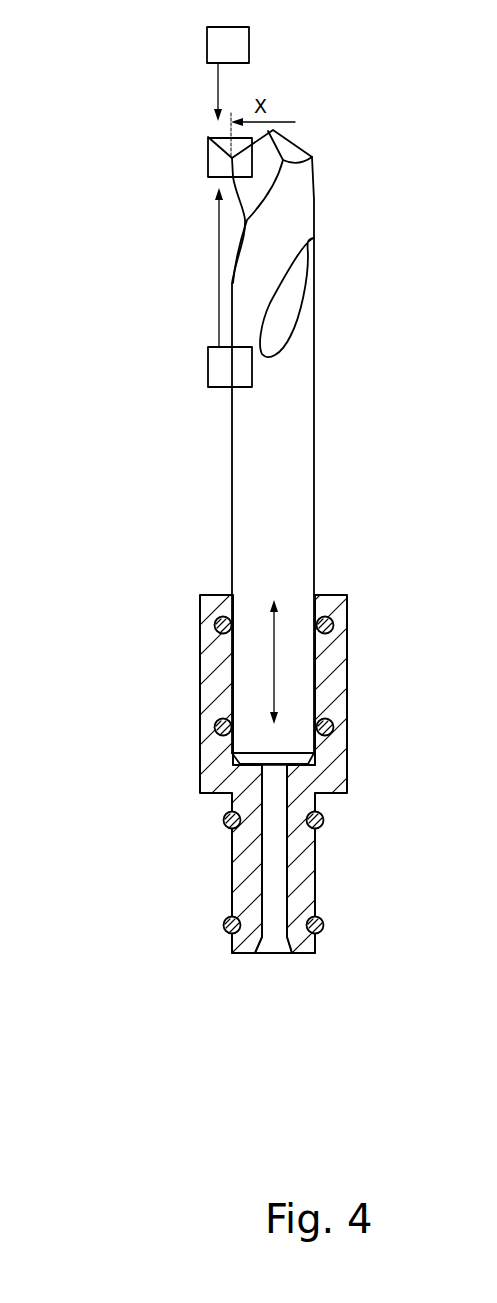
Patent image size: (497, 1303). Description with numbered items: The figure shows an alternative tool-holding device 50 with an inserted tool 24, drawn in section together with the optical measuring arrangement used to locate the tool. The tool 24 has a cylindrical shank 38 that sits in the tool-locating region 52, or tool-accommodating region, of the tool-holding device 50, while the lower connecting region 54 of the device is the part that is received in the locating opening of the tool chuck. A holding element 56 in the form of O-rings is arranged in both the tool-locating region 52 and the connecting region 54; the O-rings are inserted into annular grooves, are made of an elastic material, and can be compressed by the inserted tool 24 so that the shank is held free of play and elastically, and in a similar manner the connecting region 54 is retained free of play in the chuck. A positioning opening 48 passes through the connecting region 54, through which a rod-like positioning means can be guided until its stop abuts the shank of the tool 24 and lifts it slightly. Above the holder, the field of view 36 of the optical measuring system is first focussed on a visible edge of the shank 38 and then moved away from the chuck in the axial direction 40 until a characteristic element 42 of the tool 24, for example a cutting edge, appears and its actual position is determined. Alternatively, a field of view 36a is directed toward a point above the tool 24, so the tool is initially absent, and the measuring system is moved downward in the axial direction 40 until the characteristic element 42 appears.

The tool 24 is at (209, 432).
The field of view 36 is at (208, 362).
The field of view 36a is at (207, 53).
The cylindrical shank 38 is at (262, 530).
The axial direction 40 is at (216, 232).
The characteristic element 42 is at (208, 138).
The positioning opening 48 is at (273, 907).
The tool-holding device 50 is at (178, 755).
The tool-locating region 52 is at (208, 685).
The connecting region 54 is at (240, 862).
The holding element 56 is at (201, 596).